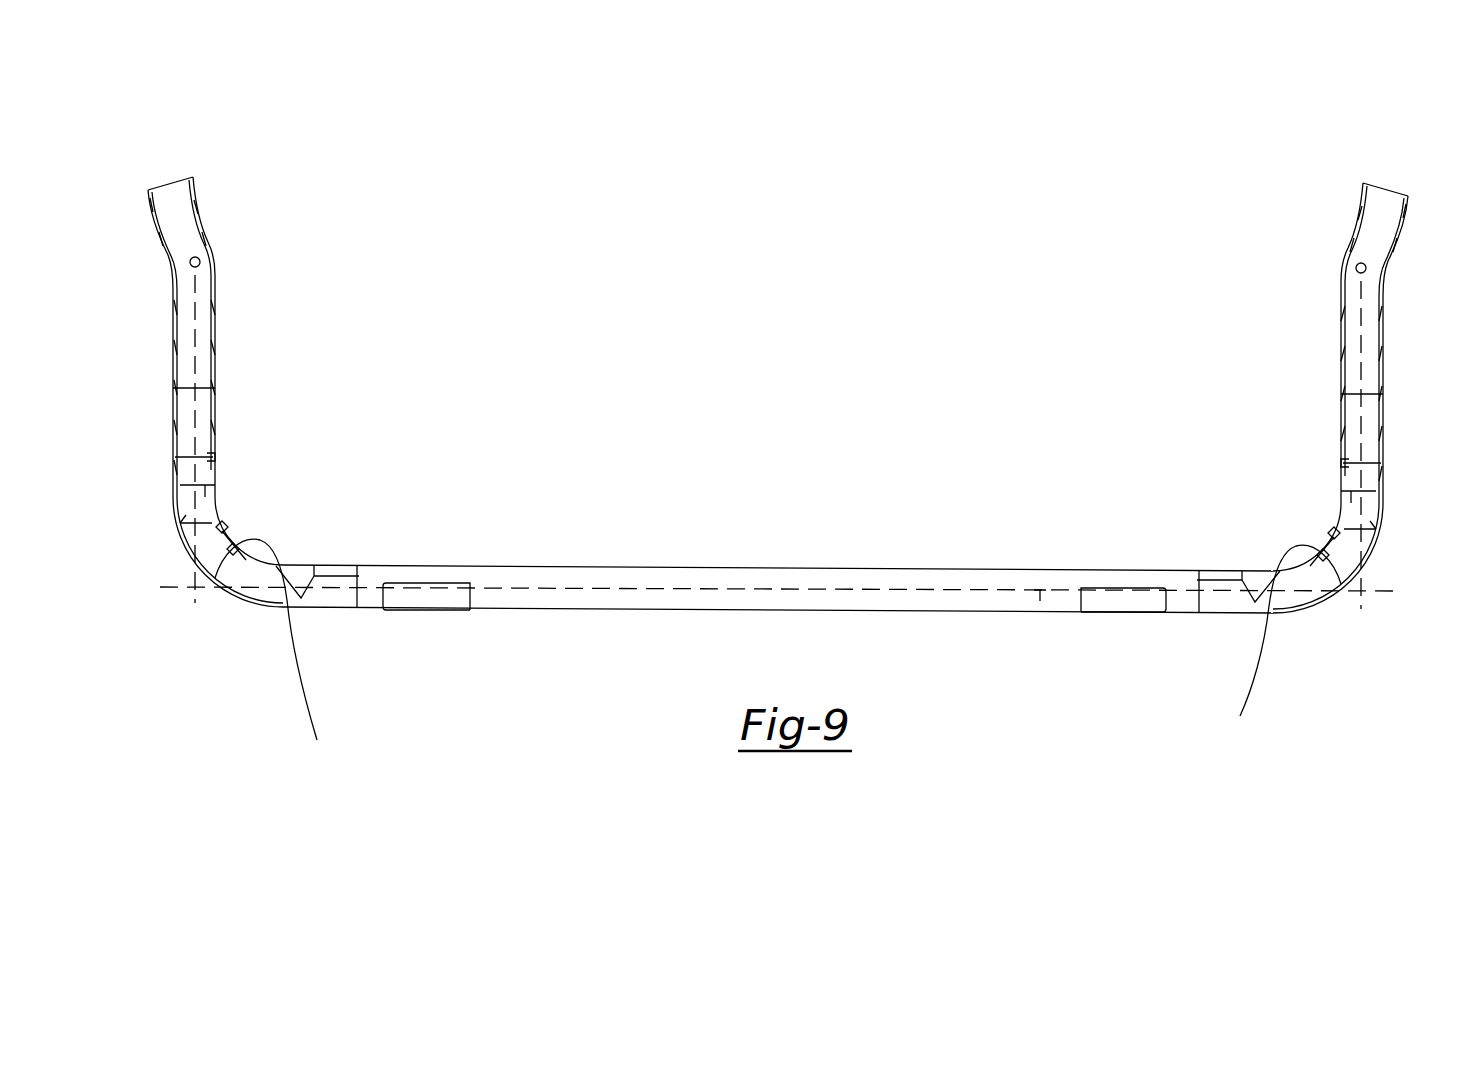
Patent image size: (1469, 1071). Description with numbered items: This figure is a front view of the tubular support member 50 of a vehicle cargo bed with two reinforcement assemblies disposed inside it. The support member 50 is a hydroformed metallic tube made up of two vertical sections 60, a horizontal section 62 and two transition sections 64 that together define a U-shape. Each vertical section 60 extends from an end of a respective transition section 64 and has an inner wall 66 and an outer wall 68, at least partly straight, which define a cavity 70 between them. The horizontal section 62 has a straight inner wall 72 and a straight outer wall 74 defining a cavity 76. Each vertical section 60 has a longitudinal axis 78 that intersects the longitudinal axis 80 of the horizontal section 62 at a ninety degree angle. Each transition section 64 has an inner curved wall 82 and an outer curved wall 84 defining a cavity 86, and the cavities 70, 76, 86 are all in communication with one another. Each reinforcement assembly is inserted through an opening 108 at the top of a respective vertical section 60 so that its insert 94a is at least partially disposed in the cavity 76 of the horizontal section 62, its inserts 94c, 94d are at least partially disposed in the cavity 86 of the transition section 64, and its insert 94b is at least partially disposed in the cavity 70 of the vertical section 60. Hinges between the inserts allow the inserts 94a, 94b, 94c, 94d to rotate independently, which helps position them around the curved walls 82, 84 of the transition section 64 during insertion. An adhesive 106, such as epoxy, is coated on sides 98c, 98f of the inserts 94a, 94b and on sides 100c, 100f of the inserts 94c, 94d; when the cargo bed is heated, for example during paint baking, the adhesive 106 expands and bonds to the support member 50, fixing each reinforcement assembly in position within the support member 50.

The support member 50 is at (305, 230).
The vertical section 60 is at (226, 383).
The horizontal section 62 is at (946, 619).
The transition section 64 is at (293, 503).
The inner wall 66 is at (214, 311).
The outer wall 68 is at (170, 345).
The cavity 70 is at (200, 358).
The straight inner wall 72 is at (818, 569).
The straight outer wall 74 is at (655, 610).
The cavity 76 is at (753, 582).
The longitudinal axis 78 is at (216, 443).
The longitudinal axis 80 is at (1040, 612).
The inner curved wall 82 is at (778, 654).
The outer curved wall 84 is at (243, 596).
The cavity 86 is at (247, 548).
The insert 94a is at (348, 650).
The insert 94b is at (172, 461).
The insert 94c is at (254, 609).
The insert 94d is at (181, 546).
The side 98c is at (216, 457).
The side 98f is at (174, 470).
The side 100c is at (228, 517).
The side 100f is at (188, 580).
The adhesive 106 is at (200, 478).
The opening 108 is at (168, 185).